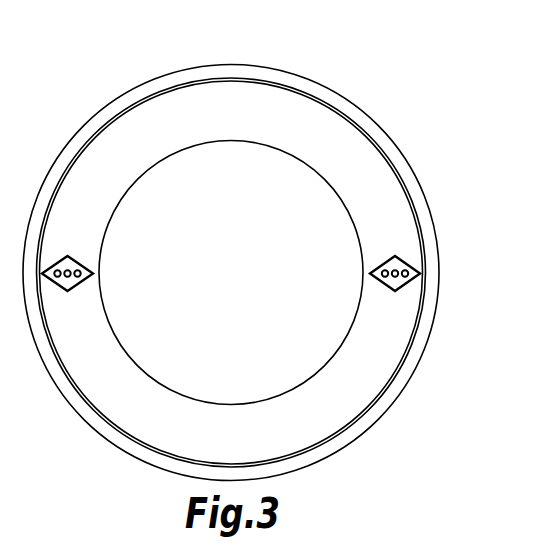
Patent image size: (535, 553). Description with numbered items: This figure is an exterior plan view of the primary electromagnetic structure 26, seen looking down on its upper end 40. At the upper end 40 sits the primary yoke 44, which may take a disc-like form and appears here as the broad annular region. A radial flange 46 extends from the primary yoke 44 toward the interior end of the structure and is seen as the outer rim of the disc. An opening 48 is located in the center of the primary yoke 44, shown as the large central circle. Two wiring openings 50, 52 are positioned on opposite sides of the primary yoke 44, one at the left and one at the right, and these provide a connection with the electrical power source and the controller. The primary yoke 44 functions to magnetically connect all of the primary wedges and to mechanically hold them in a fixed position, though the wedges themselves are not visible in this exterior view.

The primary electromagnetic structure 26 is at (163, 66).
The upper end 40 is at (97, 150).
The primary yoke 44 is at (294, 110).
The radial flange 46 is at (374, 122).
The opening 48 is at (330, 185).
The wiring opening 50 is at (75, 258).
The wiring opening 52 is at (388, 258).